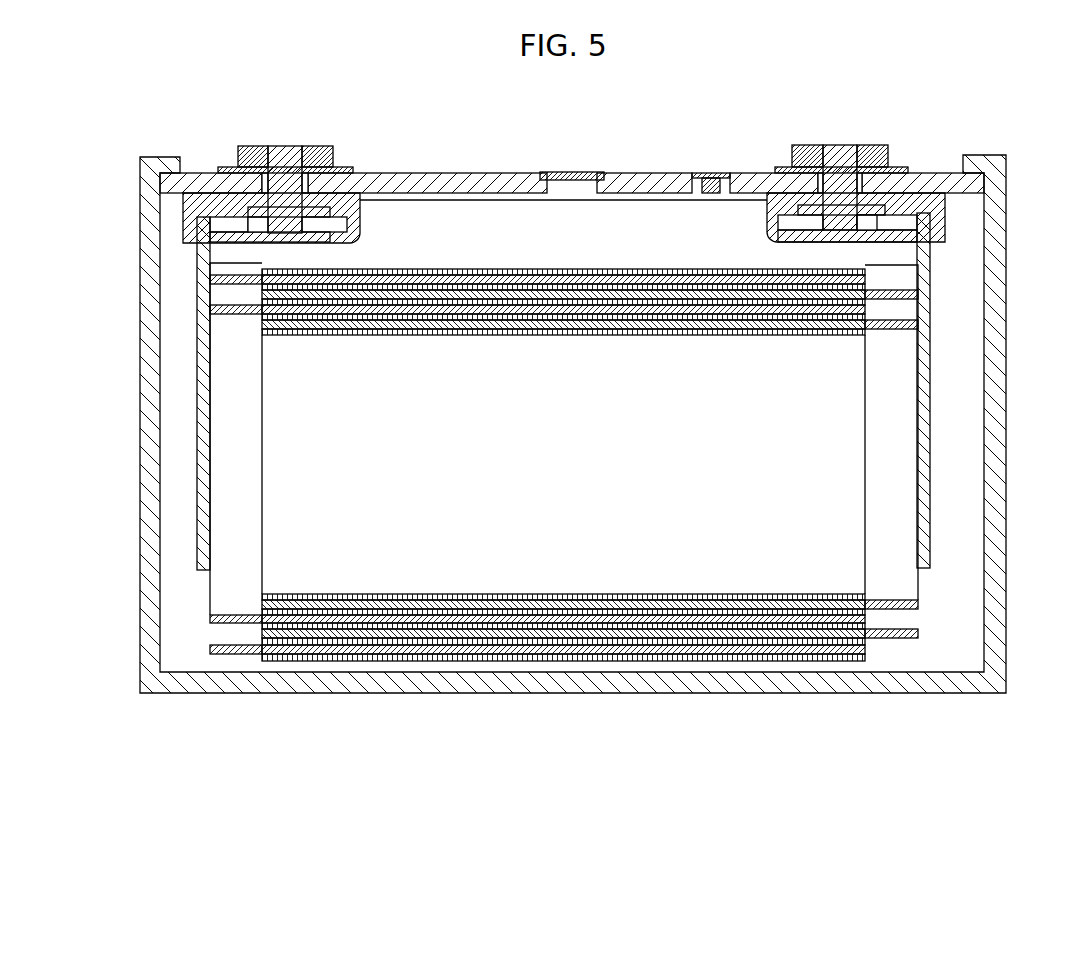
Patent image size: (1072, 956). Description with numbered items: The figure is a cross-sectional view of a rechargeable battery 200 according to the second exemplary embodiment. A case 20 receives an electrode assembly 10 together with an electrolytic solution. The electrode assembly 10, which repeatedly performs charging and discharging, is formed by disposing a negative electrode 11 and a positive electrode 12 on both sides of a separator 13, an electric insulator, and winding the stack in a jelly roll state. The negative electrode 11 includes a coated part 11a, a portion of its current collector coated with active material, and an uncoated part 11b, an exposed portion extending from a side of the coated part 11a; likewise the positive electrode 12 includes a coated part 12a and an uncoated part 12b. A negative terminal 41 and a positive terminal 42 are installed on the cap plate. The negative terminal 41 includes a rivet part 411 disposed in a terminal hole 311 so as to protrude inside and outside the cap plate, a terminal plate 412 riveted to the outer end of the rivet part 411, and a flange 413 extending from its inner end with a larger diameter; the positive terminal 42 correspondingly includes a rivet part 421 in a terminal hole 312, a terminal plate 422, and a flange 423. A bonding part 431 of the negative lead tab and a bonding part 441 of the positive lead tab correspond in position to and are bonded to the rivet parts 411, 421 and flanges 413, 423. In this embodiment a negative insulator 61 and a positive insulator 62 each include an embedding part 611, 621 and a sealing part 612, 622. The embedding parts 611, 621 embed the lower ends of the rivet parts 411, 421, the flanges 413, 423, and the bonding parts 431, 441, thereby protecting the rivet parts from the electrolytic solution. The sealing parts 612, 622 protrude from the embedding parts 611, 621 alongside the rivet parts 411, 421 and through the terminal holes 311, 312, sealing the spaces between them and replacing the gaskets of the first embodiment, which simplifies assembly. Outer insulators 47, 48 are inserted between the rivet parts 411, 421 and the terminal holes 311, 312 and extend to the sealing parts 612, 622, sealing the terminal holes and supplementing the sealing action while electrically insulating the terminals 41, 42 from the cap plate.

The rechargeable battery 200 is at (582, 105).
The case 20 is at (996, 430).
The electrode assembly 10 is at (562, 516).
The negative electrode 11 is at (536, 522).
The coated part 11a is at (305, 654).
The uncoated part 11b is at (236, 503).
The positive electrode 12 is at (590, 529).
The coated part 12a is at (803, 643).
The uncoated part 12b is at (891, 510).
The separator 13 is at (578, 660).
The negative terminal 41 is at (207, 167).
The rivet part 411 is at (288, 147).
The terminal plate 412 is at (238, 148).
The flange 413 is at (327, 222).
The terminal hole 311 is at (276, 168).
The outer insulator 47 is at (345, 168).
The bonding part 431 is at (213, 236).
The negative insulator 61 is at (281, 383).
The embedding part 611 is at (335, 232).
The sealing part 612 is at (324, 196).
The positive terminal 42 is at (926, 167).
The rivet part 421 is at (842, 146).
The terminal plate 422 is at (888, 148).
The flange 423 is at (838, 228).
The terminal hole 312 is at (862, 168).
The outer insulator 48 is at (782, 168).
The bonding part 441 is at (822, 240).
The positive insulator 62 is at (851, 382).
The embedding part 621 is at (774, 236).
The sealing part 622 is at (802, 197).